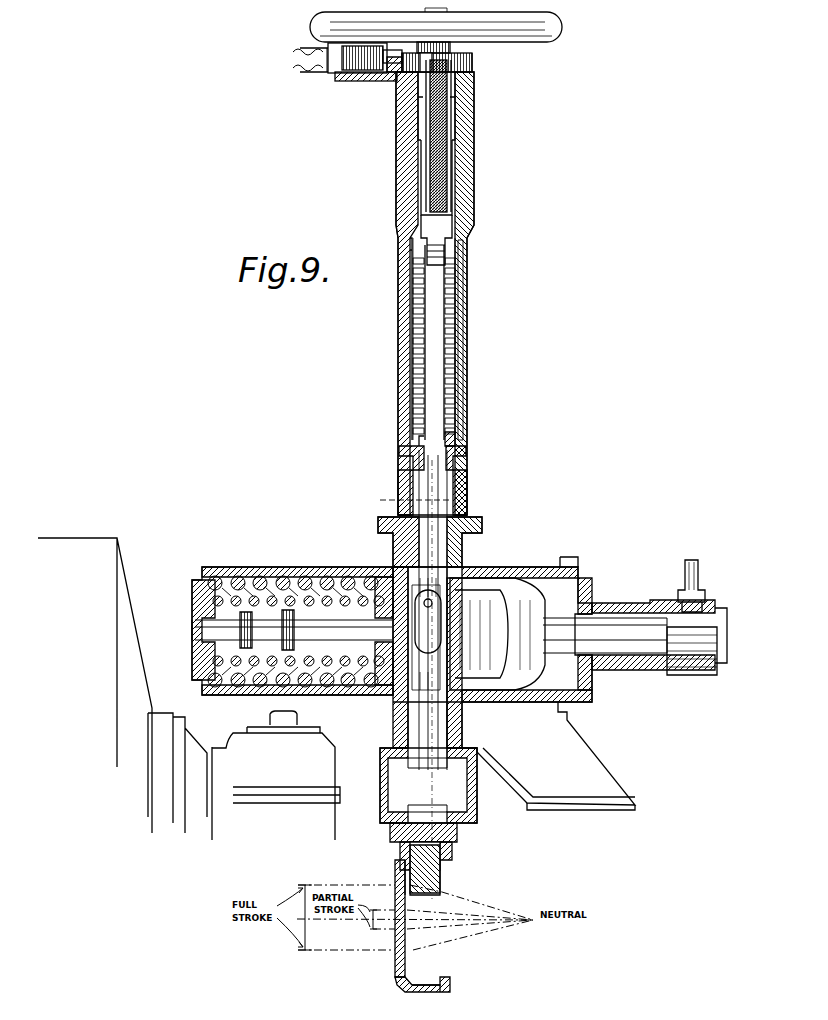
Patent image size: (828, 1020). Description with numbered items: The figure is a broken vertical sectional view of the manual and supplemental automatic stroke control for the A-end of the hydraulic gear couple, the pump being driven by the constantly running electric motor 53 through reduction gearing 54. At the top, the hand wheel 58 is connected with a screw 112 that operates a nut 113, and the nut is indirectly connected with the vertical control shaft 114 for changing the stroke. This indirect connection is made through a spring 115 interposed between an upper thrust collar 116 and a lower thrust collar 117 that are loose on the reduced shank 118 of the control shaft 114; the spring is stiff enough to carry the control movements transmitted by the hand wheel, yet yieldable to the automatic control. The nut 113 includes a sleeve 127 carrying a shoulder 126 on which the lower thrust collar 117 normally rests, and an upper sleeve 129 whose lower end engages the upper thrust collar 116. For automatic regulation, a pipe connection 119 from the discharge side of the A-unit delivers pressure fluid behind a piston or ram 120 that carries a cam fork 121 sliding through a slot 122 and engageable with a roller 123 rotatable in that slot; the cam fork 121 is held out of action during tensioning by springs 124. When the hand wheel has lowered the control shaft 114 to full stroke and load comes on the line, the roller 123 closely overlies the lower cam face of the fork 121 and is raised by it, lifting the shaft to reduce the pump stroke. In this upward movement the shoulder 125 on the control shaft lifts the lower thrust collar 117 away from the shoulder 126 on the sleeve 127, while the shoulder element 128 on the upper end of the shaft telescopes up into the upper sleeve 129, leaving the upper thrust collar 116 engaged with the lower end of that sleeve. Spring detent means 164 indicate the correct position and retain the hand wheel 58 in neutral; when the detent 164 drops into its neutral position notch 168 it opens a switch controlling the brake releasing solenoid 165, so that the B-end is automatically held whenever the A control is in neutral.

The hand wheel 58 is at (530, 42).
The neutral position notch 168 is at (462, 62).
The spring detent means 164 is at (400, 76).
The brake releasing solenoid 165 is at (299, 68).
The nut 113 is at (472, 110).
The screw 112 is at (440, 153).
The upper sleeve 129 is at (455, 196).
The shoulder element 128 is at (470, 246).
The upper thrust collar 116 is at (408, 268).
The spring 115 is at (458, 350).
The reduced shank 118 is at (420, 360).
The sleeve 127 is at (463, 392).
The lower thrust collar 117 is at (458, 438).
The shoulder 126 is at (466, 454).
The shoulder 125 is at (412, 455).
The vertical control shaft 114 is at (425, 487).
The slot 122 is at (455, 500).
The springs 124 is at (290, 580).
The cam fork 121 is at (473, 704).
The roller 123 is at (440, 612).
The piston or ram 120 is at (655, 612).
The pipe connection 119 is at (686, 570).
The electric motor 53 is at (96, 546).
The reduction gearing 54 is at (322, 733).